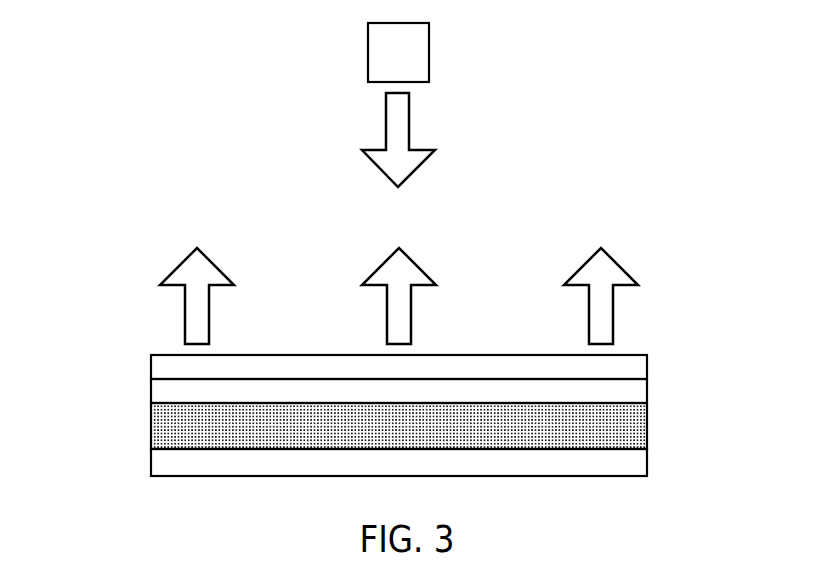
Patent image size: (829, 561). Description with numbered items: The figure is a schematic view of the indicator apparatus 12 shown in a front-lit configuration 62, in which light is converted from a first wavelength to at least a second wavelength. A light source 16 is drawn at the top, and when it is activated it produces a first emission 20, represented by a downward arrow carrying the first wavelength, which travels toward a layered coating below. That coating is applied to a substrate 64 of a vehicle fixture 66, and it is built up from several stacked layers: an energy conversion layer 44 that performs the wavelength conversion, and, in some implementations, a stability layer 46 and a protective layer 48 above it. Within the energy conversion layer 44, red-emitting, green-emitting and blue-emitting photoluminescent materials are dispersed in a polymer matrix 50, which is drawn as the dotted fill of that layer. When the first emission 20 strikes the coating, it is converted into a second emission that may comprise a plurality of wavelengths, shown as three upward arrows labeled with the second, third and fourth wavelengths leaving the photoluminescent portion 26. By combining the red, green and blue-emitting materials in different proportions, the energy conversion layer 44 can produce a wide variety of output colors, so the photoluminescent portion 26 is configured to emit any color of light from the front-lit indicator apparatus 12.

The indicator apparatus 12 is at (122, 67).
The light source 16 is at (398, 52).
The first emission 20 is at (392, 122).
The front-lit configuration 62 is at (567, 153).
The photoluminescent portion 26 is at (213, 272).
The vehicle fixture 66 is at (105, 383).
The protective layer 48 is at (640, 365).
The stability layer 46 is at (638, 390).
The energy conversion layer 44 is at (412, 438).
The polymer matrix 50 is at (157, 418).
The substrate 64 is at (637, 460).